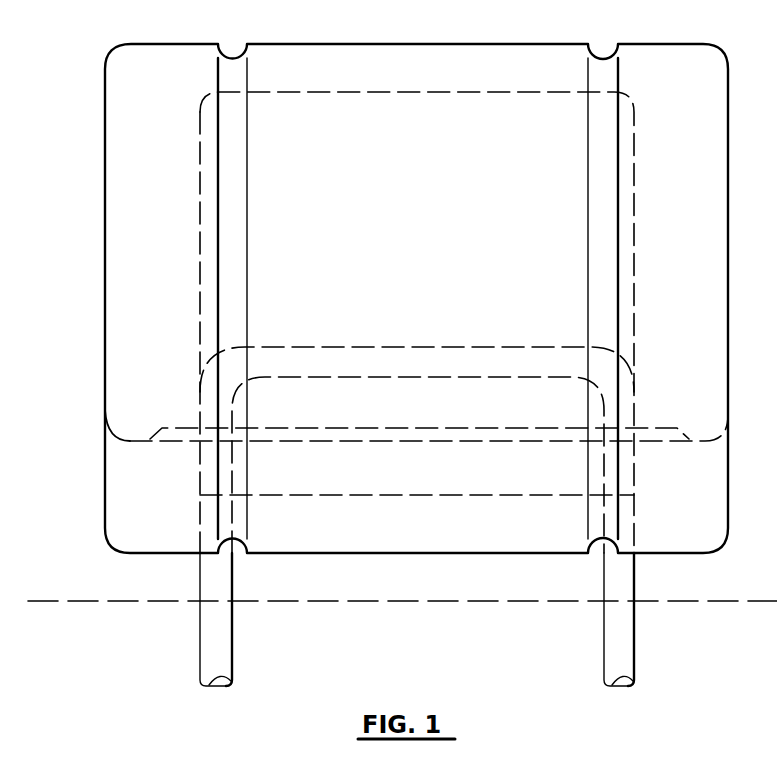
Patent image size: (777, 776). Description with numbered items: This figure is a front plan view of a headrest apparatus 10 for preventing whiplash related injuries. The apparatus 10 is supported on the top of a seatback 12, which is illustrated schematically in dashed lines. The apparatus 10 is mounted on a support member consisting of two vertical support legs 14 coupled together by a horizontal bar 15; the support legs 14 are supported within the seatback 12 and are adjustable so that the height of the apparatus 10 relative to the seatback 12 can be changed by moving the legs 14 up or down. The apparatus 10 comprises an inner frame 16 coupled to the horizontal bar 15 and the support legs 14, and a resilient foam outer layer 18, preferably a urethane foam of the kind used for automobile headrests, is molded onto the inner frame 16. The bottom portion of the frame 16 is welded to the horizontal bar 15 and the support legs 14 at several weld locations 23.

The apparatus 10 is at (82, 114).
The seatback 12 is at (82, 600).
The vertical support legs 14 is at (224, 661).
The horizontal bar 15 is at (363, 347).
The inner frame 16 is at (198, 232).
The resilient foam outer layer 18 is at (348, 279).
The weld locations 23 is at (427, 357).